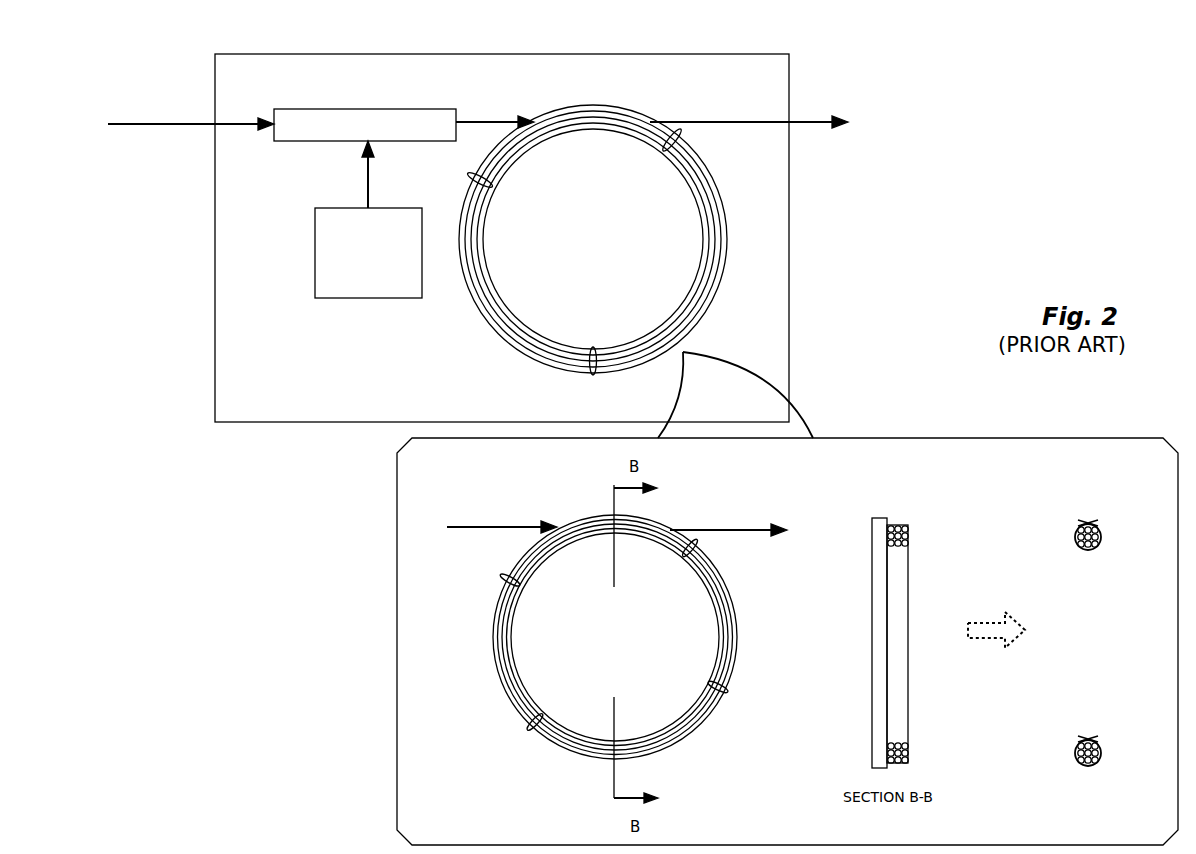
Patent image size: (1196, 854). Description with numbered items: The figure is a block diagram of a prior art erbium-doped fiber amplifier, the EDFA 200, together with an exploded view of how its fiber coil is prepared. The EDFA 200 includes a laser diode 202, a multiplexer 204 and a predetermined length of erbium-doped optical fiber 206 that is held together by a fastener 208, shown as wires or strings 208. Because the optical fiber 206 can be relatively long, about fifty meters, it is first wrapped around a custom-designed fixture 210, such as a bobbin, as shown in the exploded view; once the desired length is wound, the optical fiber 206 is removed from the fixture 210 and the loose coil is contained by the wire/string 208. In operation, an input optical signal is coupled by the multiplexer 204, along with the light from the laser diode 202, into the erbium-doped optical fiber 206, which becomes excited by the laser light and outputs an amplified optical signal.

The EDFA 200 is at (590, 238).
The laser diode 202 is at (357, 240).
The multiplexer 204 is at (282, 107).
The erbium-doped optical fiber 206 is at (723, 418).
The fastener 208 is at (762, 474).
The fixture 210 is at (854, 643).